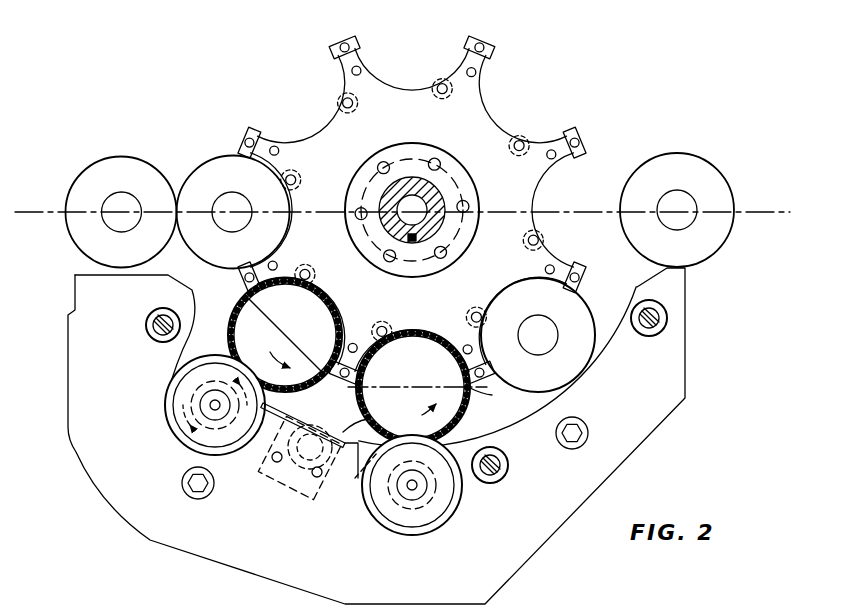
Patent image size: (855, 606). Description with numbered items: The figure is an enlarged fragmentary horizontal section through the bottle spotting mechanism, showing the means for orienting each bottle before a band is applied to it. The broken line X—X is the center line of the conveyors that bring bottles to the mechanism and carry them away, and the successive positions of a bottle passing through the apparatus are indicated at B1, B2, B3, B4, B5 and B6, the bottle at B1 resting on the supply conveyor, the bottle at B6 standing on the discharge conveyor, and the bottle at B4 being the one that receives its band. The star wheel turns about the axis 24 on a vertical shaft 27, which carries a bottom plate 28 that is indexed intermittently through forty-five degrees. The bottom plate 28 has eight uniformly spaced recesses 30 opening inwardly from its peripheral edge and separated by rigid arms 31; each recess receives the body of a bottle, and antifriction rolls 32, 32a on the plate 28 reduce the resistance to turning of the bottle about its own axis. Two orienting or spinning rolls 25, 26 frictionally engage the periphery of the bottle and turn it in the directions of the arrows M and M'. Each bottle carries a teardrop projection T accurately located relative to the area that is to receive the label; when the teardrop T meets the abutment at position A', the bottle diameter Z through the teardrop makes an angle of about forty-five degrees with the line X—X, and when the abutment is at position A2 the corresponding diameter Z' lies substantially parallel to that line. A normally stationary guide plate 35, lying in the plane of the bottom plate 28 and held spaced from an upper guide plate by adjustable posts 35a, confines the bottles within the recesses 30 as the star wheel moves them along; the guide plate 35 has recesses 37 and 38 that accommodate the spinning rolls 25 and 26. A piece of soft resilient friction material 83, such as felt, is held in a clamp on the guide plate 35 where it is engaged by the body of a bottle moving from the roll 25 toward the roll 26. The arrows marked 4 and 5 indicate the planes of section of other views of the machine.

The conveyor center line X is at (25, 212).
The lower guide plate 35 is at (685, 372).
The posts or columns 35a is at (668, 319).
The recesses 30 is at (500, 110).
The rigid arms 31 is at (556, 154).
The antifriction roll 32 is at (525, 138).
The antifriction roll 32a is at (481, 51).
The bottom plate 28 is at (522, 187).
The vertical shaft 27 is at (461, 227).
The axis of the star wheel 24 is at (449, 248).
The bottle position B1 is at (118, 160).
The bottle position B2 is at (216, 165).
The bottle position B3 is at (318, 314).
The bottle position B4 is at (466, 415).
The bottle position B5 is at (578, 318).
The bottle position B6 is at (727, 228).
The bottle diameter Z is at (301, 319).
The arrow M is at (257, 345).
The bottle diameter Z' is at (424, 367).
The arrow M' is at (421, 403).
The friction material 83 is at (398, 392).
The recess 37 is at (174, 386).
The spinning roll 25 is at (200, 366).
The spinning roll 26 is at (432, 516).
The teardrop T is at (309, 435).
The abutment position A' is at (345, 417).
The abutment position A2 is at (492, 395).
The recess 38 is at (305, 463).
The section line 4- 4 is at (296, 30).
The section line 5- 5 is at (129, 352).